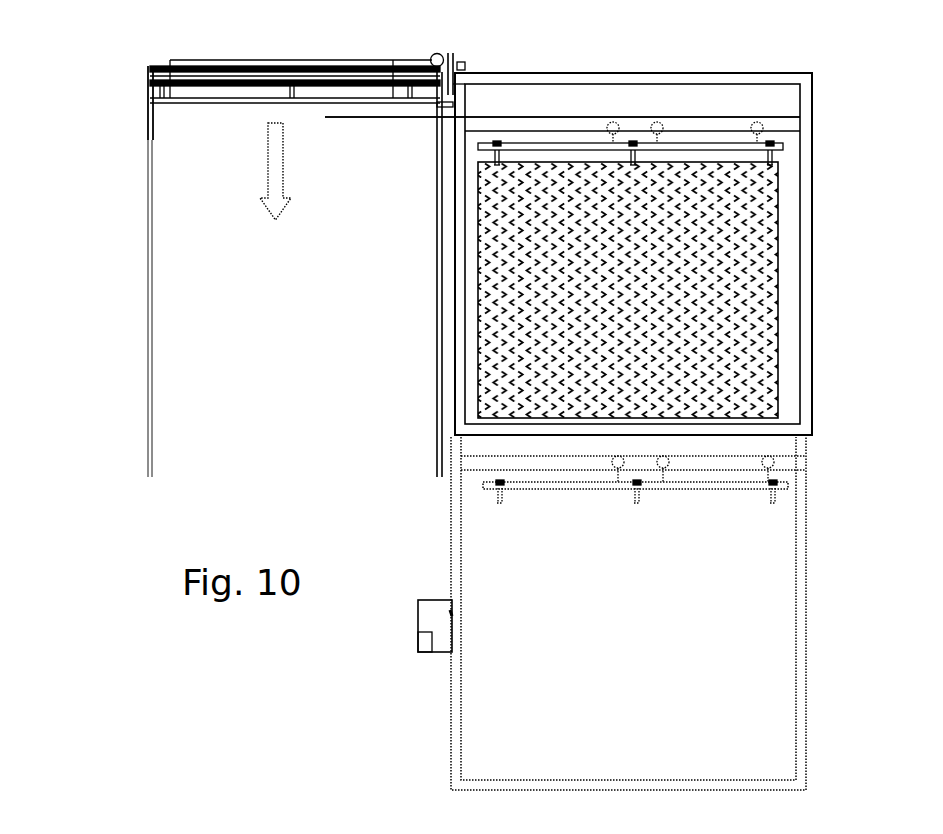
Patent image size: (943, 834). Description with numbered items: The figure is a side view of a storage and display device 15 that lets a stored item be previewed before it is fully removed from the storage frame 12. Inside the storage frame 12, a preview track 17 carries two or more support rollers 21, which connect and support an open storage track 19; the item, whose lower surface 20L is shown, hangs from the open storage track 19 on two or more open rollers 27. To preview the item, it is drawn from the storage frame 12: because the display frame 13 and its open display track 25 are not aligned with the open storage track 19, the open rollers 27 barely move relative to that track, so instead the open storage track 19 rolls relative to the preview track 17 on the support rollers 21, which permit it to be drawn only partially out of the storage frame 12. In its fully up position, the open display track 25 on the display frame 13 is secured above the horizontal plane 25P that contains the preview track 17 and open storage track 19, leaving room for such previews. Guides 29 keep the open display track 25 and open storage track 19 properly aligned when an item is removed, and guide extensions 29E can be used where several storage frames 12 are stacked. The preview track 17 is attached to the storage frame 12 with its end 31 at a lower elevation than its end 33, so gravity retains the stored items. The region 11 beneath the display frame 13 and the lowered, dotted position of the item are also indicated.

The vehicle cargo area / floor 11 is at (296, 320).
The storage frame 12 is at (808, 232).
The display frame 13 is at (380, 47).
The storage and display device 15 is at (74, 191).
The preview track 17 is at (793, 128).
The open storage track 19 is at (783, 148).
The lower surface 20L is at (640, 310).
The support rollers 21 is at (657, 122).
The open display track 25 is at (232, 103).
The horizontal plane 25P is at (365, 117).
The open rollers 27 is at (497, 150).
The guides 29 is at (150, 100).
The guide extensions 29E is at (148, 329).
The end of preview track 31 is at (793, 463).
The end of preview track 33 is at (458, 456).